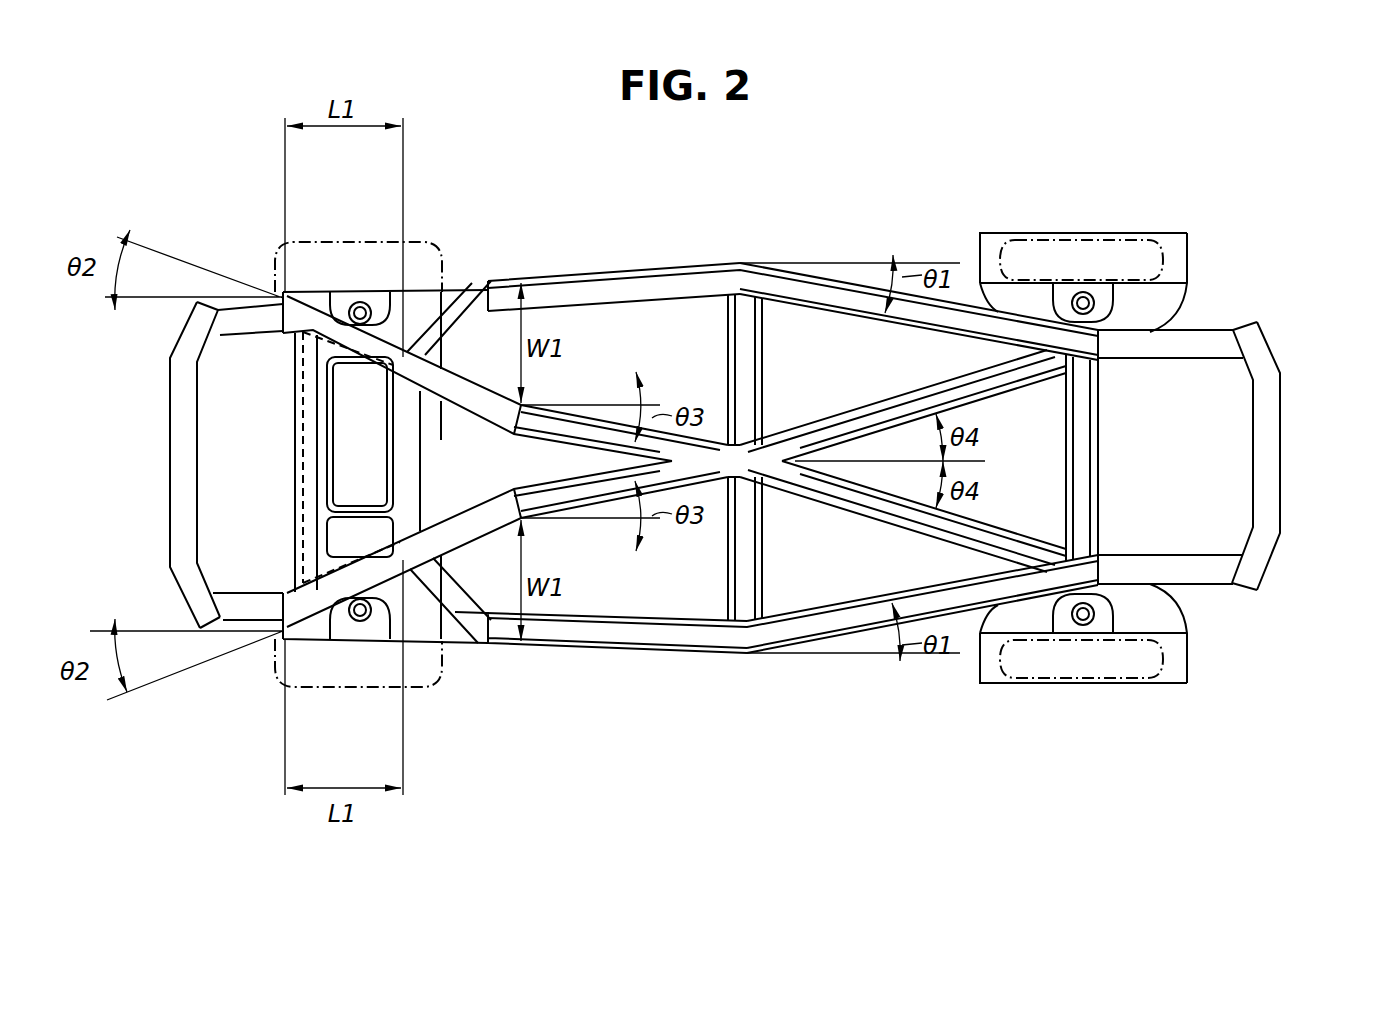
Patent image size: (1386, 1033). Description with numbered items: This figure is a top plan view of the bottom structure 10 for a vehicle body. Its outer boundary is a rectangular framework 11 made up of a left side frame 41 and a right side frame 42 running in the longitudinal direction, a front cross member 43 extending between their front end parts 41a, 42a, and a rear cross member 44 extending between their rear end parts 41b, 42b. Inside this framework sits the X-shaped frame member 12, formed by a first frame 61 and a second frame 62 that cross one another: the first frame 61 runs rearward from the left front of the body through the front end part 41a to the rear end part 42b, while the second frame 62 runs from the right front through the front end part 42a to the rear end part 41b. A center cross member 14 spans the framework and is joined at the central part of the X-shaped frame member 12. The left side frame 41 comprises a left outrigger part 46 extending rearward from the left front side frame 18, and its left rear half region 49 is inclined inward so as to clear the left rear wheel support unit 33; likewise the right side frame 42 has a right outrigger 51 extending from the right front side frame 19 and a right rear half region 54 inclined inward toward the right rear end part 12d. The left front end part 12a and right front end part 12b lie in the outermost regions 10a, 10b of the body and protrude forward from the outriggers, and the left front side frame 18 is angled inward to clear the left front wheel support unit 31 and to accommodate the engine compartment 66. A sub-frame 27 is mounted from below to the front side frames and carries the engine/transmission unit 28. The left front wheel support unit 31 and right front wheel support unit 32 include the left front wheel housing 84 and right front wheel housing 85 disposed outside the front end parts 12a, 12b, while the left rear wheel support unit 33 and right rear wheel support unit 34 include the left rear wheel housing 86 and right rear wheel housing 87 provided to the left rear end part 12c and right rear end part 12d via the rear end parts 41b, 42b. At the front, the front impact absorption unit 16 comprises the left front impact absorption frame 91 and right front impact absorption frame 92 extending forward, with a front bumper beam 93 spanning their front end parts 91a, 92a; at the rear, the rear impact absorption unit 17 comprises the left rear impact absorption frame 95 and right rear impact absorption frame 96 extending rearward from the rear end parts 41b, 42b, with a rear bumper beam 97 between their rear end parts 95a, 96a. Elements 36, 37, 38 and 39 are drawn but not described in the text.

The bottom structure 10 is at (225, 122).
The rectangular framework 11 is at (577, 258).
The outermost region on the left side of the vehicle body 10a is at (622, 645).
The outermost region on the right side of the vehicle body 10b is at (648, 262).
The X-shaped frame member 12 is at (850, 378).
The left front end part 12a is at (290, 605).
The right front end part 12b is at (247, 322).
The left rear end part 12c is at (1040, 600).
The right rear end part 12d is at (1036, 318).
The center cross member 14 is at (765, 568).
The front impact absorption unit 16 is at (165, 412).
The rear impact absorption unit 17 is at (1290, 420).
The left front side frame 18 is at (413, 540).
The right front side frame 19 is at (417, 388).
The sub-frame 27 is at (305, 422).
The engine/transmission unit 28 is at (300, 460).
The left front wheel support unit 31 is at (380, 640).
The right front wheel support unit 32 is at (382, 290).
The left rear wheel support unit 33 is at (1137, 688).
The right rear wheel support unit 34 is at (1150, 234).
The front lower mount rubber 36 is at (440, 680).
The front upper mount rubber 37 is at (442, 240).
The rear lower mount rubber 38 is at (1085, 685).
The rear upper mount rubber 39 is at (1082, 250).
The left side frame 41 is at (699, 656).
The front end part of the left side frame 41a is at (412, 622).
The rear end part of the left side frame 41b is at (1090, 572).
The right side frame 42 is at (732, 262).
The front end part of the right side frame 42a is at (417, 300).
The rear end part of the right side frame 42b is at (1087, 343).
The front cross member 43 is at (420, 455).
The rear cross member 44 is at (1087, 470).
The left outrigger part 46 is at (455, 588).
The left rear half region 49 is at (963, 597).
The right outrigger 51 is at (452, 338).
The right rear half region 54 is at (972, 312).
The first frame 61 is at (813, 417).
The second frame 62 is at (855, 518).
The engine compartment 66 is at (315, 400).
The left front wheel housing 84 is at (337, 640).
The right front wheel housing 85 is at (340, 300).
The left rear wheel housing 86 is at (1180, 685).
The right rear wheel housing 87 is at (1180, 250).
The left front impact absorption frame 91 is at (215, 603).
The front end part of the left front impact absorption frame 91a is at (225, 600).
The right front impact absorption frame 92 is at (222, 318).
The front end part of the right front impact absorption frame 92a is at (220, 318).
The front bumper beam 93 is at (182, 450).
The left rear impact absorption frame 95 is at (1180, 573).
The rear end part of the left rear impact absorption frame 95a is at (1258, 588).
The right rear impact absorption frame 96 is at (1170, 340).
The rear end part of the right rear impact absorption frame 96a is at (1258, 330).
The rear bumper beam 97 is at (1268, 458).